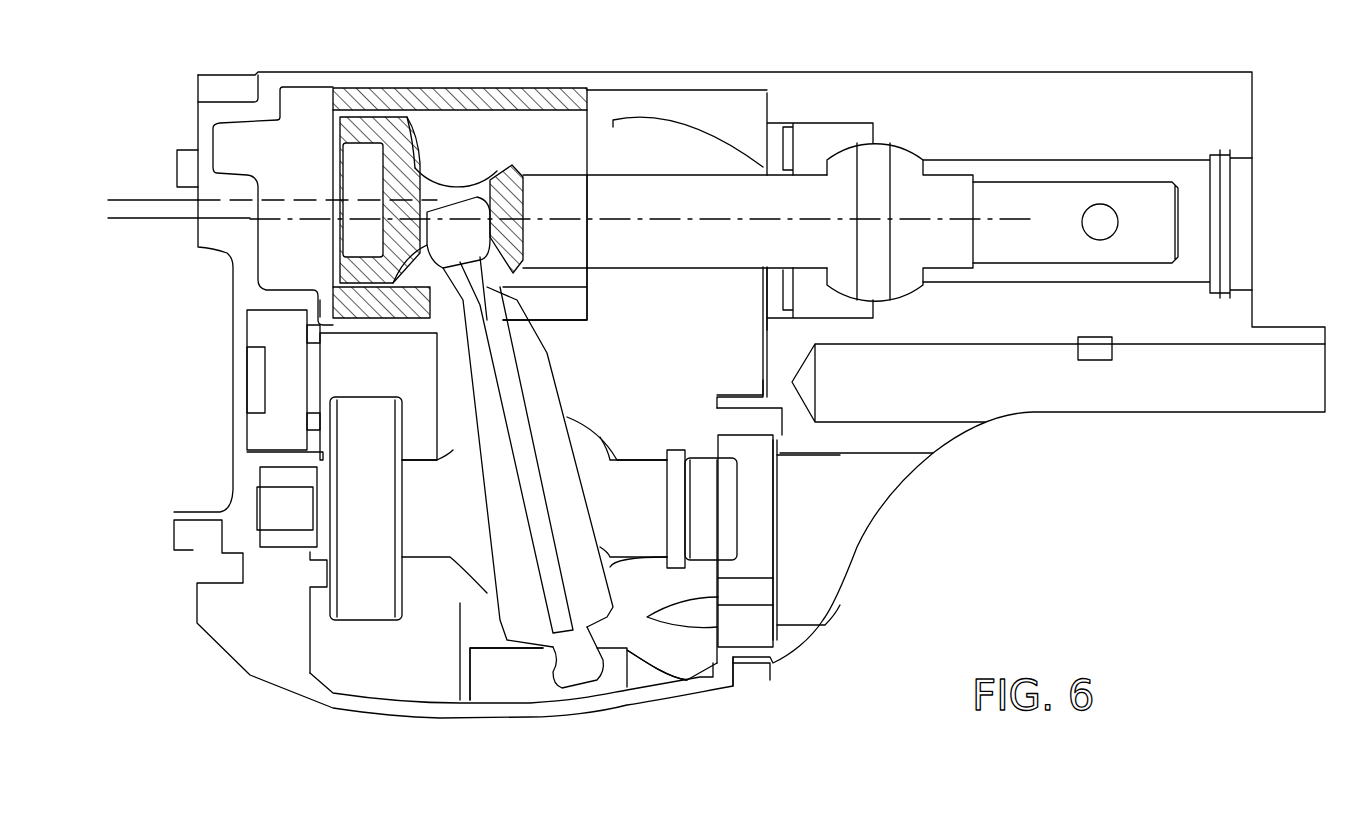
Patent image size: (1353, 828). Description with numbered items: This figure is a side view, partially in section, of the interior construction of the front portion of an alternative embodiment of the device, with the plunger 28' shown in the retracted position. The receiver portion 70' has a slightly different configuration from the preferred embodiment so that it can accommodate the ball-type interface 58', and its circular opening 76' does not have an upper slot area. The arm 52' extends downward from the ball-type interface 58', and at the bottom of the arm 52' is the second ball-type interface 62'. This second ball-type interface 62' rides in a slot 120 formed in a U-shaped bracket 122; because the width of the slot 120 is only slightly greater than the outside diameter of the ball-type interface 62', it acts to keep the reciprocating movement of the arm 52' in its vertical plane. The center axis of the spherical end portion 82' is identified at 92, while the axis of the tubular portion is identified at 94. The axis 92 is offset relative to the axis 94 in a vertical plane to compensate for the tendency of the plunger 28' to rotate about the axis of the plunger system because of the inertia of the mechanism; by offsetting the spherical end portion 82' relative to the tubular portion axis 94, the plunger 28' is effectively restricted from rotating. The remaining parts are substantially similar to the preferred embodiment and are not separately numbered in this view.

The center axis of the spherical end portion 92 is at (140, 197).
The spherical end portion 82' is at (335, 200).
The circular opening 76' is at (445, 200).
The receiver portion 70' is at (460, 174).
The ball-type interface 58' is at (505, 232).
The axis of the tubular portion 94 is at (681, 222).
The plunger 28' is at (616, 264).
The arm 52' is at (550, 452).
The second ball-type interface 62' is at (585, 691).
The U-shaped bracket 122 is at (633, 667).
The slot 120 is at (490, 667).